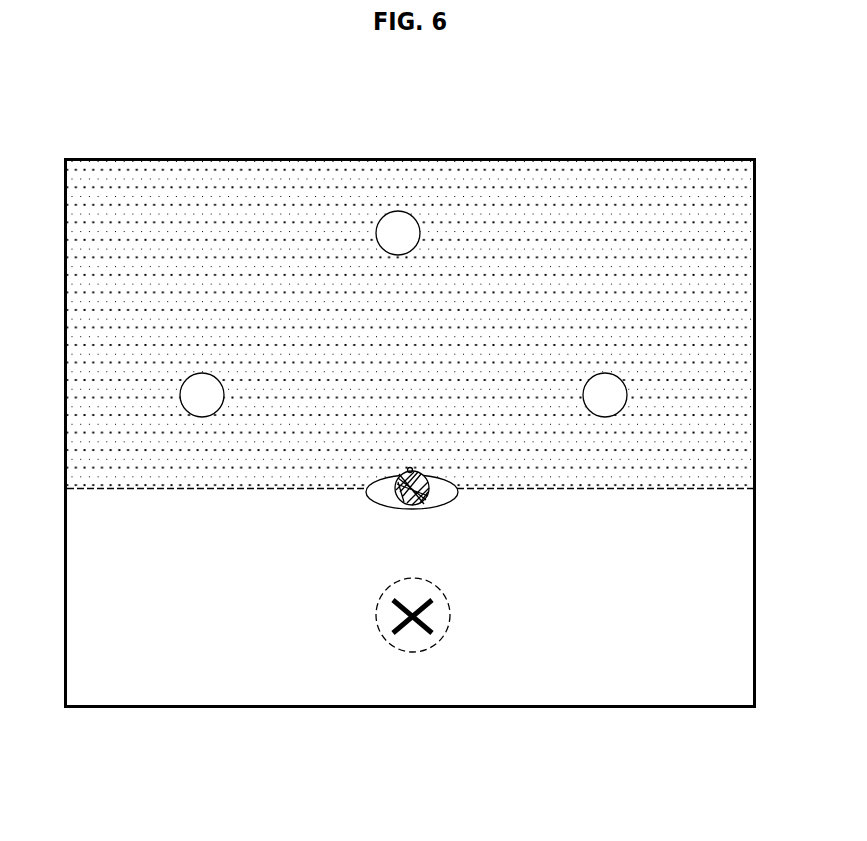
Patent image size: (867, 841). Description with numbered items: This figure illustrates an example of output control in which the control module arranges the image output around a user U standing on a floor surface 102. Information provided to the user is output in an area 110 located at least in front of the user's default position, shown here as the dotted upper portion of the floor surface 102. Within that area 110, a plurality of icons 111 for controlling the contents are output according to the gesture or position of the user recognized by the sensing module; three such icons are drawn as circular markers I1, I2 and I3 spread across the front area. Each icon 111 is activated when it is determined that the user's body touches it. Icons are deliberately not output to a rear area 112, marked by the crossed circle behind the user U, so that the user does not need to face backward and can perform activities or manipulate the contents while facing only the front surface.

The floor surface 102 is at (630, 622).
The area 110 is at (588, 197).
The icons 111 is at (403, 261).
The first indicator I1 is at (202, 395).
The second indicator I2 is at (398, 233).
The third indicator I3 is at (605, 395).
The user U is at (374, 500).
The rear area 112 is at (448, 620).